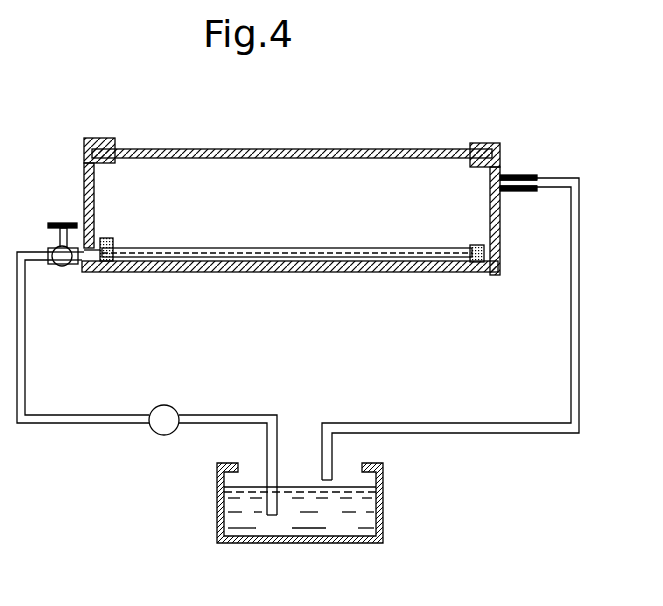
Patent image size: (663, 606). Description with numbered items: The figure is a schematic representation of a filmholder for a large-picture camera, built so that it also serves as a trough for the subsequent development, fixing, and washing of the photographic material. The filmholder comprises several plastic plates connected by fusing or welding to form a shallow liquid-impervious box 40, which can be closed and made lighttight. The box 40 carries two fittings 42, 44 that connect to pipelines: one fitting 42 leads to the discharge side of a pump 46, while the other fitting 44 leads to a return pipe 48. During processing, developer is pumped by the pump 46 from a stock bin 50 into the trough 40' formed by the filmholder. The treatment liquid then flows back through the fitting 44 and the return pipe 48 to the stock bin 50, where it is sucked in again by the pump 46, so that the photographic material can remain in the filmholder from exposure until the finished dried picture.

The liquid-impervious box 40 is at (317, 206).
The trough 40' is at (292, 150).
The fitting 42 is at (48, 261).
The fitting 44 is at (528, 182).
The pump 46 is at (166, 433).
The return pipe 48 is at (580, 342).
The stock bin 50 is at (223, 517).